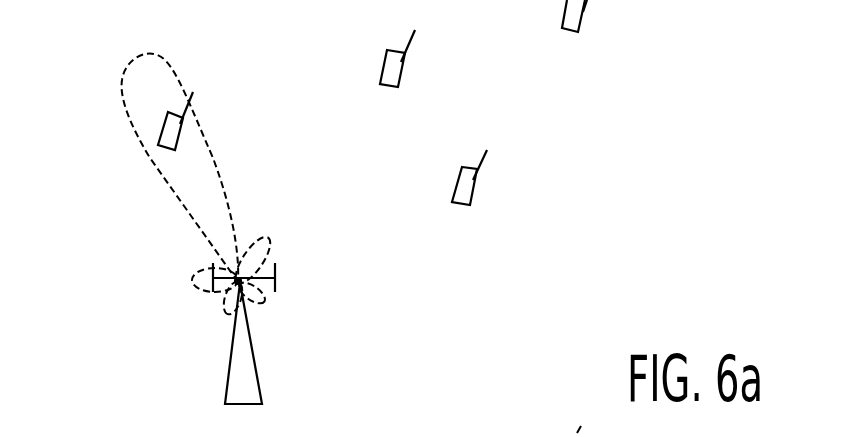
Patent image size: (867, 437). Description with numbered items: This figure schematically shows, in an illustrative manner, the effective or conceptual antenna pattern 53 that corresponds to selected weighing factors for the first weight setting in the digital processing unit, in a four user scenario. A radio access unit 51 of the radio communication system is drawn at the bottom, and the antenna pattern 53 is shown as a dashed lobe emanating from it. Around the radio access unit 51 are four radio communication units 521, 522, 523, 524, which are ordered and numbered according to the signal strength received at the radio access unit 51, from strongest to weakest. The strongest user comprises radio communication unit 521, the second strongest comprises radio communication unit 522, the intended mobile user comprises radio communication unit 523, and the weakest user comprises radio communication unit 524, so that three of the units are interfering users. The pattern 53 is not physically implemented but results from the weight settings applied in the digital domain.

The radio access unit 51 is at (240, 387).
The antenna pattern 53 is at (166, 78).
The radio communication unit 521 is at (163, 128).
The radio communication unit 522 is at (463, 193).
The radio communication unit 523 is at (390, 70).
The radio communication unit 524 is at (577, 20).